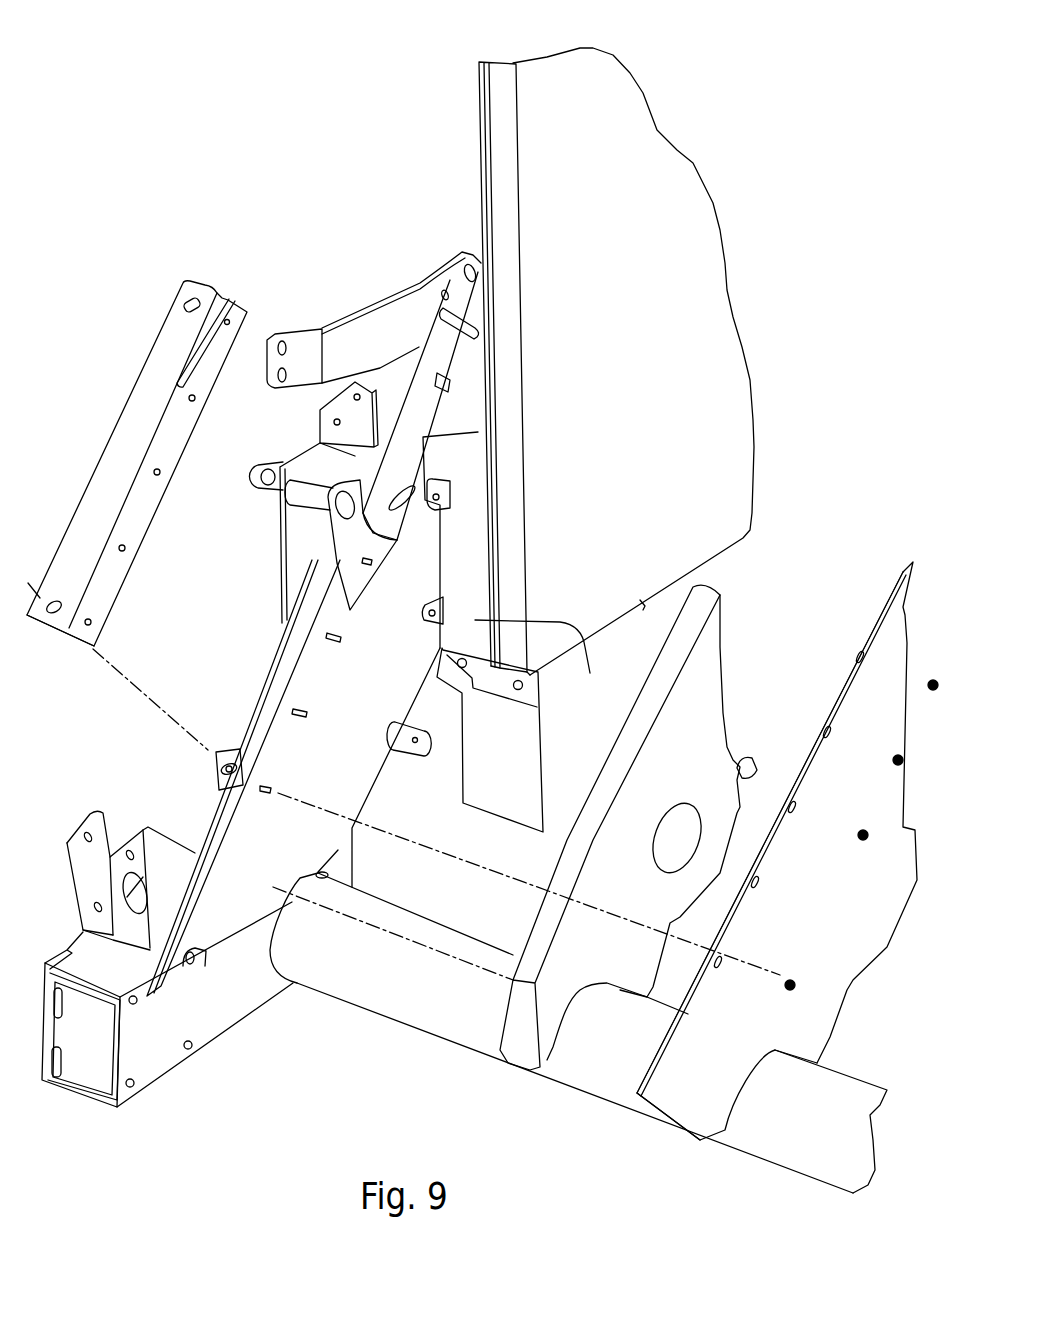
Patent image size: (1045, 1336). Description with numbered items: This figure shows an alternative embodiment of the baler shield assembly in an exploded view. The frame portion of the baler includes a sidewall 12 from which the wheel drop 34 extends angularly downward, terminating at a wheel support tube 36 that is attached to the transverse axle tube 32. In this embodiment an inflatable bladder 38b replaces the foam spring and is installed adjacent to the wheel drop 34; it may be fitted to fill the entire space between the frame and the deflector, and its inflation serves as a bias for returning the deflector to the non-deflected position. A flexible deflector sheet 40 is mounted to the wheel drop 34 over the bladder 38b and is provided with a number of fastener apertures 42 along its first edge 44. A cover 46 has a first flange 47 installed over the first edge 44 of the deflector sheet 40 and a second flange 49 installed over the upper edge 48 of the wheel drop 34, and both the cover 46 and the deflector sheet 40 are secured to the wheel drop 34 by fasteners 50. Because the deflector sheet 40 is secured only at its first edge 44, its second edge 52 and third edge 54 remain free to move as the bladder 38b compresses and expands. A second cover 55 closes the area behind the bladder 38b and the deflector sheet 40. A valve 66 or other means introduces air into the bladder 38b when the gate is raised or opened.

The sidewall 12 is at (497, 139).
The axle tube 32 is at (357, 992).
The wheel drop 34 is at (308, 670).
The wheel support tube 36 is at (217, 1017).
The inflatable bladder 38b is at (710, 645).
The deflector sheet 40 is at (903, 572).
The fastener apertures 42 is at (755, 882).
The first edge 44 is at (830, 690).
The cover 46 is at (62, 646).
The first flange 47 is at (142, 517).
The upper edge 48 is at (245, 711).
The second flange 49 is at (133, 427).
The fasteners 50 is at (310, 705).
The second edge 52 is at (682, 1122).
The third edge 54 is at (830, 1034).
The second cover 55 is at (527, 753).
The valve 66 is at (753, 760).